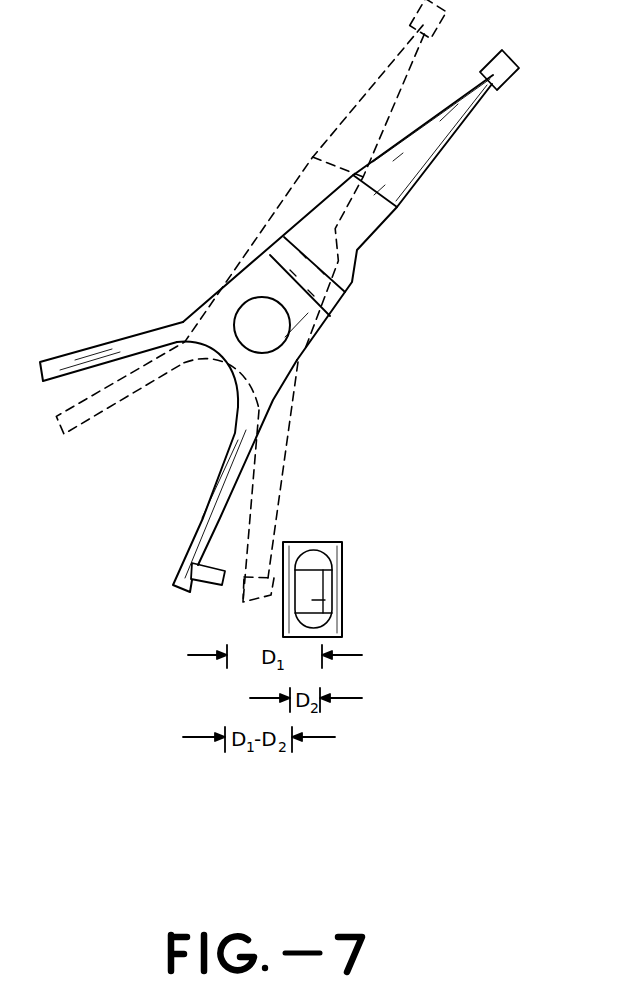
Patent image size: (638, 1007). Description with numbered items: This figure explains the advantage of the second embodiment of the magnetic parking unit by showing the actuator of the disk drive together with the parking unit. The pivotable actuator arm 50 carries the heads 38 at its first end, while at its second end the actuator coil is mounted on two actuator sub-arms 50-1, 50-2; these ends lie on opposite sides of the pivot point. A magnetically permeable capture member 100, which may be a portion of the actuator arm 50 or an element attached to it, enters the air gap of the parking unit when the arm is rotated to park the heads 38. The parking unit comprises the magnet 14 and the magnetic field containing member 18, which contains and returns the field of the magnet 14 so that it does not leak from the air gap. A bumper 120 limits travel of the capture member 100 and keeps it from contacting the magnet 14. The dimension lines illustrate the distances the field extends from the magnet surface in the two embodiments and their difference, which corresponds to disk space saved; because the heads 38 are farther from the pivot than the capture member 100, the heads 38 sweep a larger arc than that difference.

The heads 38 is at (515, 72).
The actuator arm 50 is at (346, 283).
The actuator sub-arm 50-1 is at (263, 420).
The actuator sub-arm 50-2 is at (133, 340).
The capture member 100 is at (210, 594).
The magnetic field containing member 18 is at (343, 548).
The magnet 14 is at (337, 585).
The bumper 120 is at (342, 613).